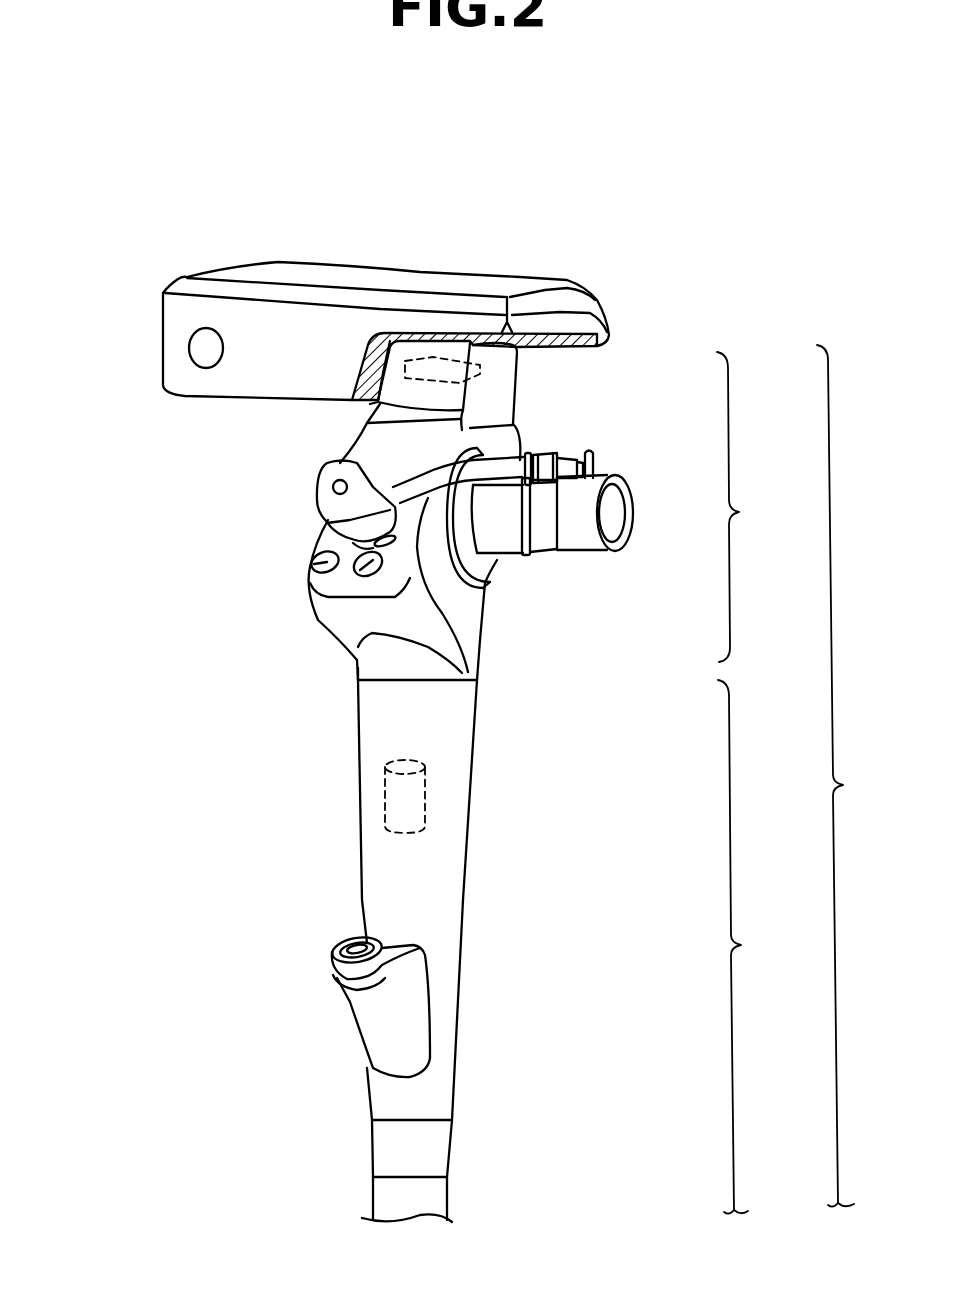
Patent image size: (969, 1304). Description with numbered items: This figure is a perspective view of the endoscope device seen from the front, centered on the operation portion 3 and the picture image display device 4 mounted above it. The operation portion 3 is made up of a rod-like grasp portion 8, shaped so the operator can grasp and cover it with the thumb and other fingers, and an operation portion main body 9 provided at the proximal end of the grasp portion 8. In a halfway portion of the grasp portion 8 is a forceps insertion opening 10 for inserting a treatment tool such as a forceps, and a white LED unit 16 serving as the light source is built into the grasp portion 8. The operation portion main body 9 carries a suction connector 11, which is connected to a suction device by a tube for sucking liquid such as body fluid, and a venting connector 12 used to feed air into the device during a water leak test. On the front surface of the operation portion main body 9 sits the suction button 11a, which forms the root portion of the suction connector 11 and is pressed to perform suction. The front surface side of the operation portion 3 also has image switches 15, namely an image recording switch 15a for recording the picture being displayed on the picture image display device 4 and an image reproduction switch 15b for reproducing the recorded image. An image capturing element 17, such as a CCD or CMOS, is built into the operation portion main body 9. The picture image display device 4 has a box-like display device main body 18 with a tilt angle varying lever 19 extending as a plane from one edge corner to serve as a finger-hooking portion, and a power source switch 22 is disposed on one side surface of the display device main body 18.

The operation portion 3 is at (842, 776).
The picture image display device 4 is at (427, 242).
The grasp portion 8 is at (743, 947).
The operation portion main body 9 is at (742, 507).
The forceps insertion opening 10 is at (370, 1022).
The suction connector 11 is at (300, 489).
The suction button 11a is at (353, 518).
The venting connector 12 is at (582, 540).
The image switches 15 is at (187, 600).
The image recording switch 15a is at (312, 563).
The image reproduction switch 15b is at (360, 576).
The white LED unit 16 is at (388, 805).
The image capturing element 17 is at (470, 378).
The display device main body 18 is at (163, 318).
The tilt angle varying lever 19 is at (605, 318).
The power source switch 22 is at (205, 352).